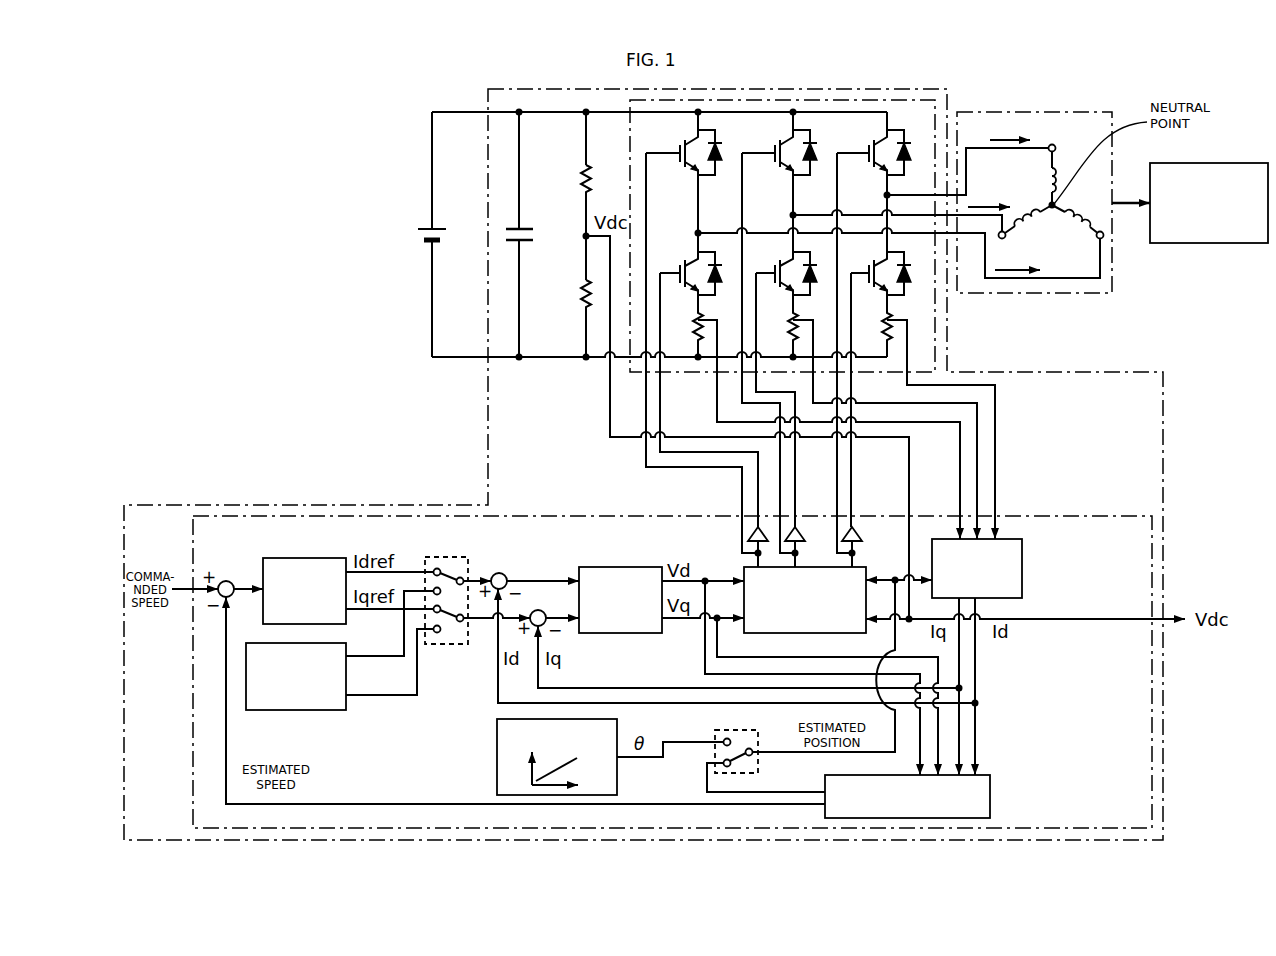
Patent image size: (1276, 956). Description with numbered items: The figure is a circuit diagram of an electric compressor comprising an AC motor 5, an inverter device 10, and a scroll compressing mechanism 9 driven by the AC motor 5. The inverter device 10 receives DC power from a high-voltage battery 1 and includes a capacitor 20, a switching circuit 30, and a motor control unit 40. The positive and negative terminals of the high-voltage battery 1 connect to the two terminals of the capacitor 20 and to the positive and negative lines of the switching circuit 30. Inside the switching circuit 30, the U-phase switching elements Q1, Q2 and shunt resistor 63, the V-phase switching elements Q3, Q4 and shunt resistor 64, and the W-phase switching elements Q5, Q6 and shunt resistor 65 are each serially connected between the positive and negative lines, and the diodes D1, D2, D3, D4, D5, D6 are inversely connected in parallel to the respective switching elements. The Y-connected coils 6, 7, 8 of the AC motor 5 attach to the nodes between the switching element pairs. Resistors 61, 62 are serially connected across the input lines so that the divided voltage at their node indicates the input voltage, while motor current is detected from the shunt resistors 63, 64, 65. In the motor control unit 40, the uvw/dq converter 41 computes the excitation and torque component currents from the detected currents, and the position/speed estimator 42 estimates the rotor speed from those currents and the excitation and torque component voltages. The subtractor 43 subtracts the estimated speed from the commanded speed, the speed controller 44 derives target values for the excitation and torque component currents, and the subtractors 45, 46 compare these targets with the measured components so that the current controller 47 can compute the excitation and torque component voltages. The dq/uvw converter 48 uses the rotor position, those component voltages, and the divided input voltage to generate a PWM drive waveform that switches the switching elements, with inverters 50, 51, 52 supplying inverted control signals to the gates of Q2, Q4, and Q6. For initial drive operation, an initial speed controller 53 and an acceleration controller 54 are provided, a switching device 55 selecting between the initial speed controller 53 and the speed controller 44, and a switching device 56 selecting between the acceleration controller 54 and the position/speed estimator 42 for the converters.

The high-voltage battery 1 is at (434, 228).
The capacitor 20 is at (529, 243).
The resistor 61 is at (580, 180).
The resistor 62 is at (580, 296).
The shunt resistor 63 is at (883, 327).
The shunt resistor 64 is at (789, 327).
The shunt resistor 65 is at (694, 327).
The switching element Q1 is at (875, 140).
The switching element Q2 is at (875, 260).
The switching element Q3 is at (781, 140).
The switching element Q4 is at (781, 260).
The switching element Q5 is at (686, 140).
The switching element Q6 is at (686, 260).
The diode D1 is at (908, 162).
The diode D2 is at (908, 284).
The diode D3 is at (814, 162).
The diode D4 is at (814, 284).
The diode D5 is at (719, 162).
The diode D6 is at (719, 284).
The AC motor 5 is at (1090, 112).
The coil 6 is at (1058, 176).
The coil 7 is at (1022, 212).
The coil 8 is at (1074, 224).
The scroll compressing mechanism 9 is at (1232, 163).
The inverter device 10 is at (1133, 371).
The switching circuit 30 is at (950, 348).
The motor control unit 40 is at (1141, 514).
The uvw/dq converter 41 is at (1010, 539).
The position/speed estimator 42 is at (992, 797).
The subtractor 43 is at (228, 581).
The speed controller 44 is at (303, 557).
The subtractor 45 is at (503, 574).
The subtractor 46 is at (543, 611).
The current controller 47 is at (620, 567).
The dq/uvw converter 48 is at (818, 634).
The inverter 50 is at (864, 534).
The inverter 51 is at (800, 530).
The inverter 52 is at (747, 534).
The initial speed controller 53 is at (306, 711).
The acceleration controller 54 is at (497, 736).
The switching device 55 is at (450, 646).
The switching device 56 is at (740, 731).